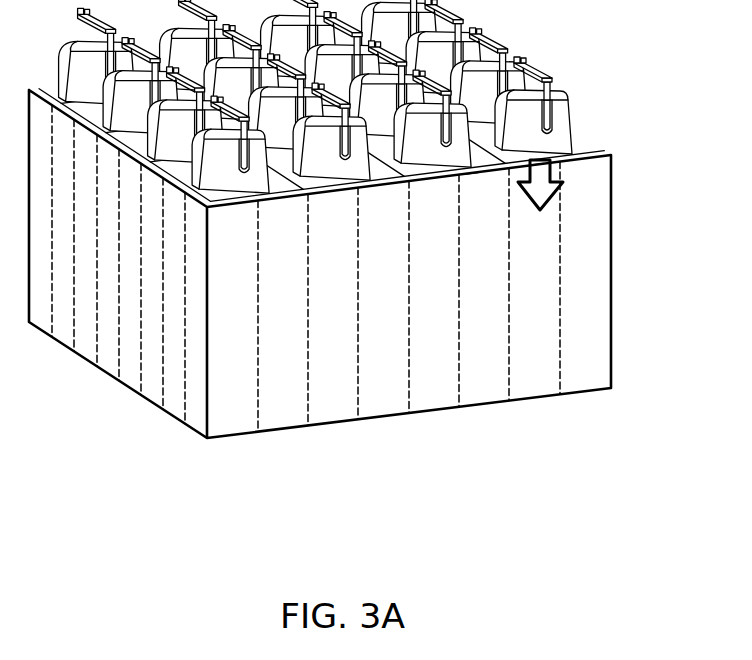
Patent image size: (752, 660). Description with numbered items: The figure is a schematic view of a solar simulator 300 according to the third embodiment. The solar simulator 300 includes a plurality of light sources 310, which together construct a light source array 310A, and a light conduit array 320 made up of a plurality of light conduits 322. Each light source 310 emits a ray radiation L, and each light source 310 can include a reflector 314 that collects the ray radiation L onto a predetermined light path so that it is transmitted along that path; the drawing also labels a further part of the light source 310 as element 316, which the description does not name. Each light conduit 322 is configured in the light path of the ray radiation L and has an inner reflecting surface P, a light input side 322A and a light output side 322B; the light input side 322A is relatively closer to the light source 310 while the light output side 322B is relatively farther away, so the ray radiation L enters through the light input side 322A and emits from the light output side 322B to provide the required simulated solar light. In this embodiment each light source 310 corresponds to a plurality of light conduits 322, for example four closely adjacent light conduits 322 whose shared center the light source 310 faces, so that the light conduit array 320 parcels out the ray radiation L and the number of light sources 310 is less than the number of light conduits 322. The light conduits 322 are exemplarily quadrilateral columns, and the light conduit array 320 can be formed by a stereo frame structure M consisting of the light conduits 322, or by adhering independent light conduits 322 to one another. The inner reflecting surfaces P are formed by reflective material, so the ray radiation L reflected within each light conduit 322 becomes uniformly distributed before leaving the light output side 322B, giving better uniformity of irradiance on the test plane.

The solar simulator 300 is at (360, 247).
The light source array 310A is at (593, 93).
The light source 310 is at (577, 127).
The reflector 314 is at (556, 108).
The connecting bar 316 is at (548, 90).
The light conduit array 320 is at (343, 273).
The light conduit 322 is at (306, 283).
The light input side 322A is at (220, 210).
The light output side 322B is at (222, 417).
The inner reflecting surface P is at (538, 158).
The stereo frame structure M is at (472, 173).
The ray radiation L is at (538, 165).